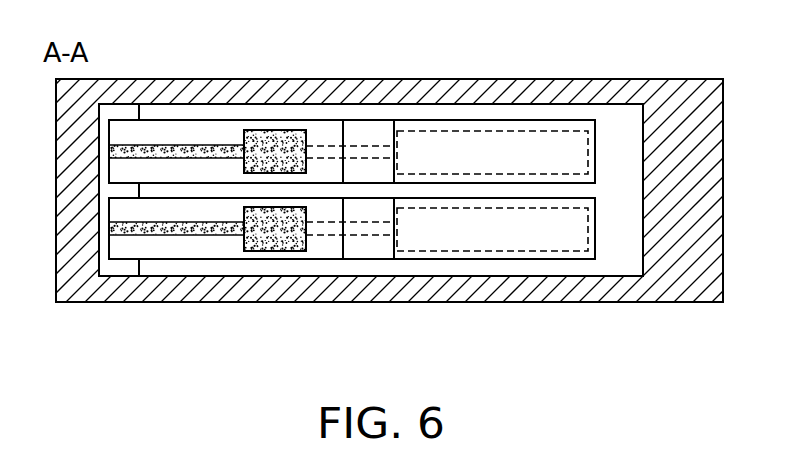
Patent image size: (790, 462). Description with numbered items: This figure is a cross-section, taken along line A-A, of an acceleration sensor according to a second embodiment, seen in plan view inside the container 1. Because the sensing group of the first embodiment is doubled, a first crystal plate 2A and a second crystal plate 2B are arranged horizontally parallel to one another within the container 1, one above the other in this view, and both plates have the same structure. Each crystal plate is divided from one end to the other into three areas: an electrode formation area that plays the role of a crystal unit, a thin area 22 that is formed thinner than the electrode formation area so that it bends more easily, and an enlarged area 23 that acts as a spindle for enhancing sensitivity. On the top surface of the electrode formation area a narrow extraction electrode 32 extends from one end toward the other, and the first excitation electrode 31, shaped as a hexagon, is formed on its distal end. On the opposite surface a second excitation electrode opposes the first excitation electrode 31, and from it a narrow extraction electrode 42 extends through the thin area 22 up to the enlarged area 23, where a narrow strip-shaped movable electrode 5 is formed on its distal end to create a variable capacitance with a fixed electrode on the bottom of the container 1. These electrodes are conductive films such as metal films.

The container 1 is at (640, 78).
The first crystal plate 2A is at (418, 265).
The second crystal plate 2B is at (415, 115).
The movable electrode 5 is at (515, 128).
The thin area 22 is at (370, 122).
The enlarged area 23 is at (558, 122).
The first excitation electrode 31 is at (282, 132).
The extraction electrode 32 is at (194, 143).
The extraction electrode 42 is at (332, 143).